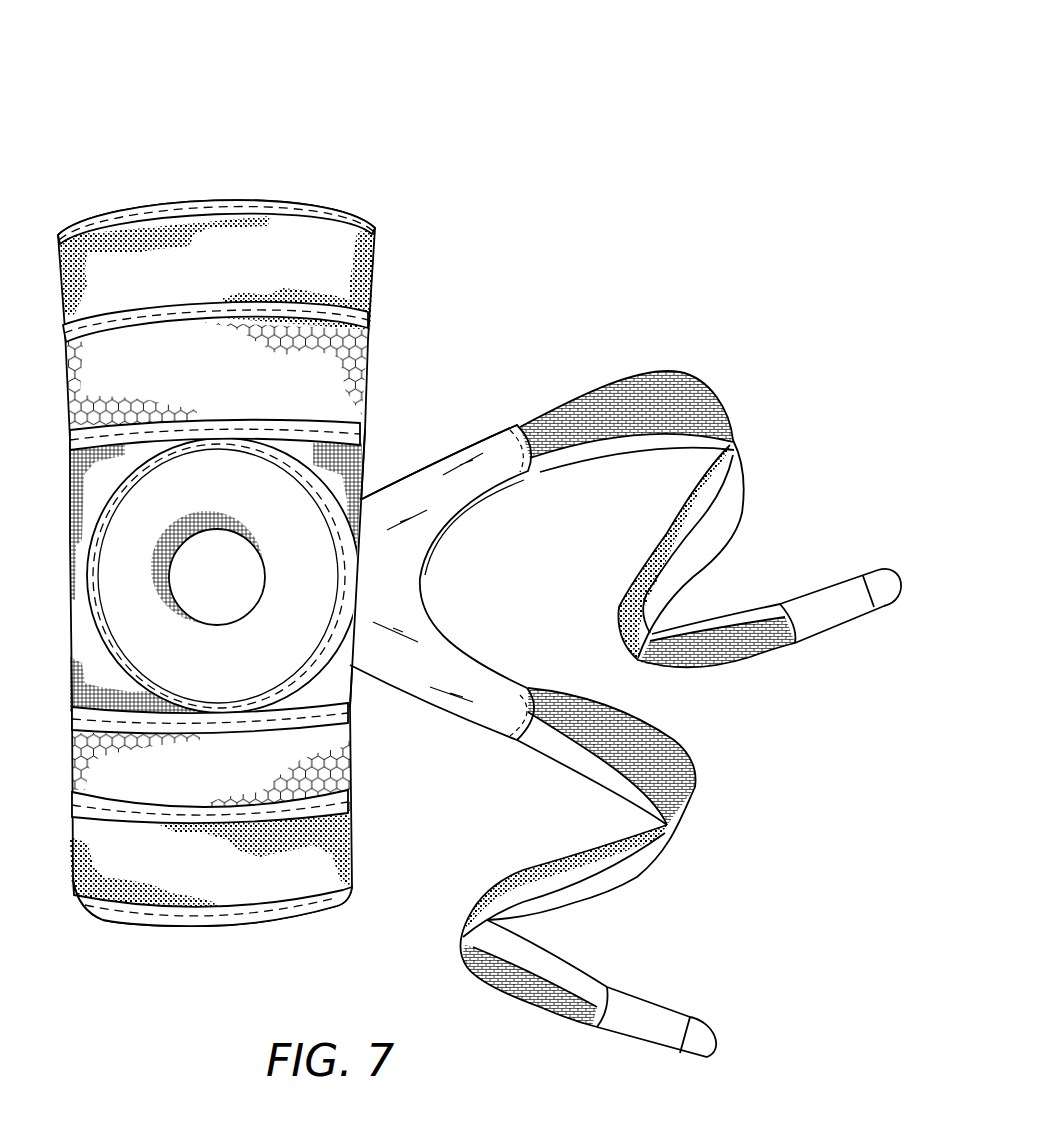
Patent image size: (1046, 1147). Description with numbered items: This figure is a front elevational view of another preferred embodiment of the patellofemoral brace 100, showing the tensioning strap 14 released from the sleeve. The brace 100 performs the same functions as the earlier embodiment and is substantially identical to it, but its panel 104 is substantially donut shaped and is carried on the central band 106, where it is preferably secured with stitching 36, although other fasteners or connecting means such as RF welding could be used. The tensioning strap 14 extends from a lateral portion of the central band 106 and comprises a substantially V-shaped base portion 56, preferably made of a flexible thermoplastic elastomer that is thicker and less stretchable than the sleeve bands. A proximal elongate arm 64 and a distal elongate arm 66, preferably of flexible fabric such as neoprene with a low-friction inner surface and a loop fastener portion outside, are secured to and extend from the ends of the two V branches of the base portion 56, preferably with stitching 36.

The patellofemoral brace 100 is at (196, 477).
The stitching 36 is at (105, 494).
The panel 104 is at (126, 594).
The central band 106 is at (361, 477).
The base portion 56 is at (397, 587).
The proximal elongate arm 64 is at (699, 382).
The distal elongate arm 66 is at (647, 772).
The tensioning strap 14 is at (625, 699).